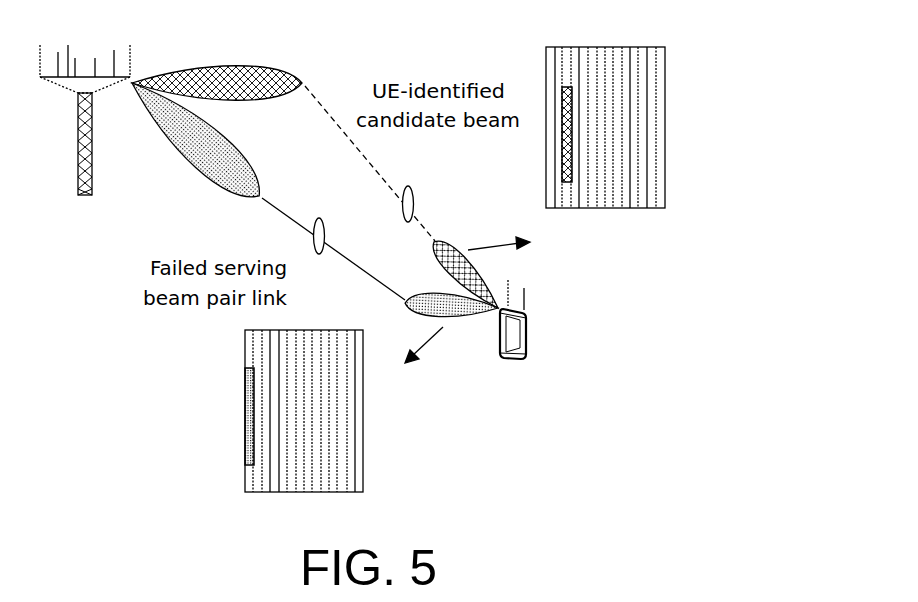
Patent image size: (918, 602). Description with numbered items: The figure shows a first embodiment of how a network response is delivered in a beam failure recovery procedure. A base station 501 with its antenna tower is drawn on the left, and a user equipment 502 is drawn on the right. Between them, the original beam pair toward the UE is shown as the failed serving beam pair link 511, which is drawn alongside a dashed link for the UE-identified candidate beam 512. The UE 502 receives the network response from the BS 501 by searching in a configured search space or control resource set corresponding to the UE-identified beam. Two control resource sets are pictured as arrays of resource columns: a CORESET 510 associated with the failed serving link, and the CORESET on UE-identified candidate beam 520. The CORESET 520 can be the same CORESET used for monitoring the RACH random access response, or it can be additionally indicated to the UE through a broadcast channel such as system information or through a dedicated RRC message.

The base station 501 is at (87, 52).
The user equipment 502 is at (528, 353).
The CORESET associated with failed serving beam pair link 510 is at (361, 411).
The failed serving beam pair link 511 is at (317, 256).
The UE-identified candidate beam 512 is at (409, 186).
The CORESET on UE-identified candidate beam 520 is at (605, 160).